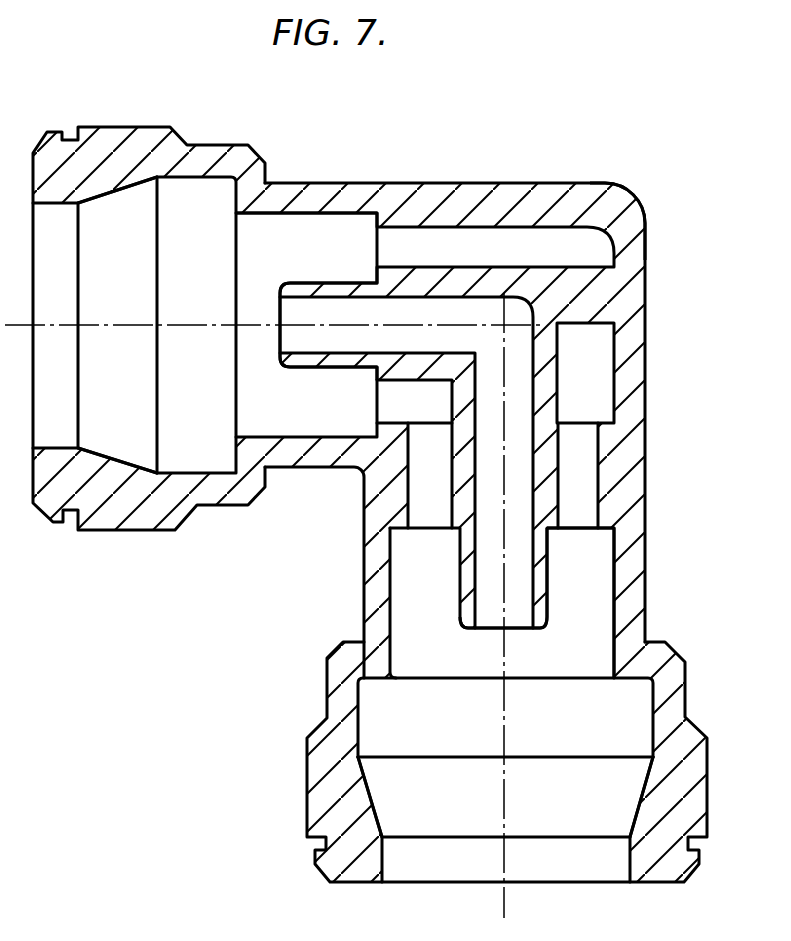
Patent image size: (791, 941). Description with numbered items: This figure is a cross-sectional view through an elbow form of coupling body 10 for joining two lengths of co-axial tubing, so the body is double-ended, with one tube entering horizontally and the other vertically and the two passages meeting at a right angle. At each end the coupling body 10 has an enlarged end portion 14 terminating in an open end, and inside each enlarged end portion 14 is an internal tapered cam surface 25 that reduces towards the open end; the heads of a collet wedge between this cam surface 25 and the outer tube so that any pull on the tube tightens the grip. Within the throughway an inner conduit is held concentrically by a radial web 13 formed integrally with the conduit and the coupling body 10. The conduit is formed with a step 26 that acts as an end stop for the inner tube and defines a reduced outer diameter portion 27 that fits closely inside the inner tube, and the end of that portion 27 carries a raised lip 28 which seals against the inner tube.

The coupling body 10 is at (651, 389).
The radial web 13 is at (614, 288).
The enlarged end portion 14 is at (133, 137).
The internal tapered cam surface 25 is at (117, 190).
The step 26 is at (367, 278).
The reduced outer diameter portion 27 is at (310, 281).
The raised lip 28 is at (286, 291).